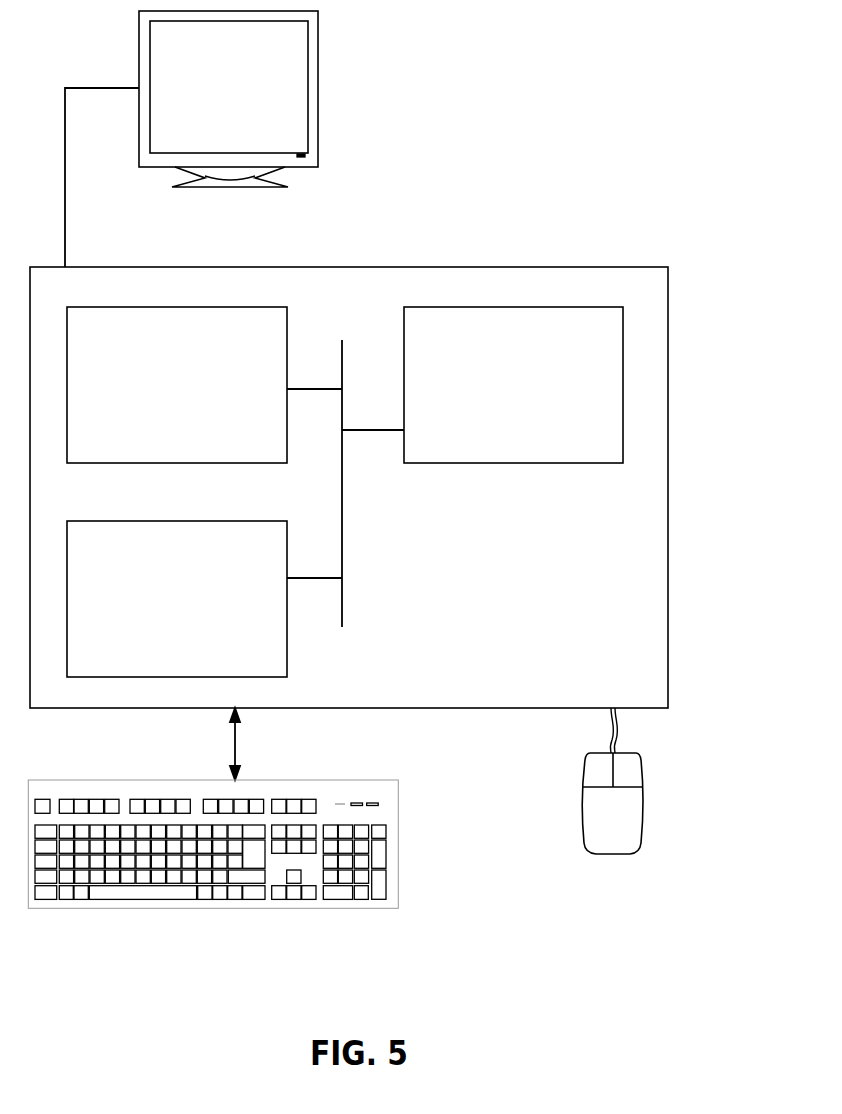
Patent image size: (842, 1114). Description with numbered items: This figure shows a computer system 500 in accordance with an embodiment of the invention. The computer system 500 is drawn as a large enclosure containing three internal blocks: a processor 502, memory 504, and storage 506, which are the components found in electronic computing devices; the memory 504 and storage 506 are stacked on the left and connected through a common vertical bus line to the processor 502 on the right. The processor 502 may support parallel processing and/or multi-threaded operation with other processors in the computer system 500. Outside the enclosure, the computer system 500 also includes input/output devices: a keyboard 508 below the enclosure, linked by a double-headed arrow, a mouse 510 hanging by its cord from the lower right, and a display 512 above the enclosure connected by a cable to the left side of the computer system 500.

The computer system 500 is at (393, 235).
The processor 502 is at (538, 397).
The memory 504 is at (199, 395).
The storage 506 is at (195, 610).
The keyboard 508 is at (213, 823).
The mouse 510 is at (633, 826).
The display 512 is at (191, 139).